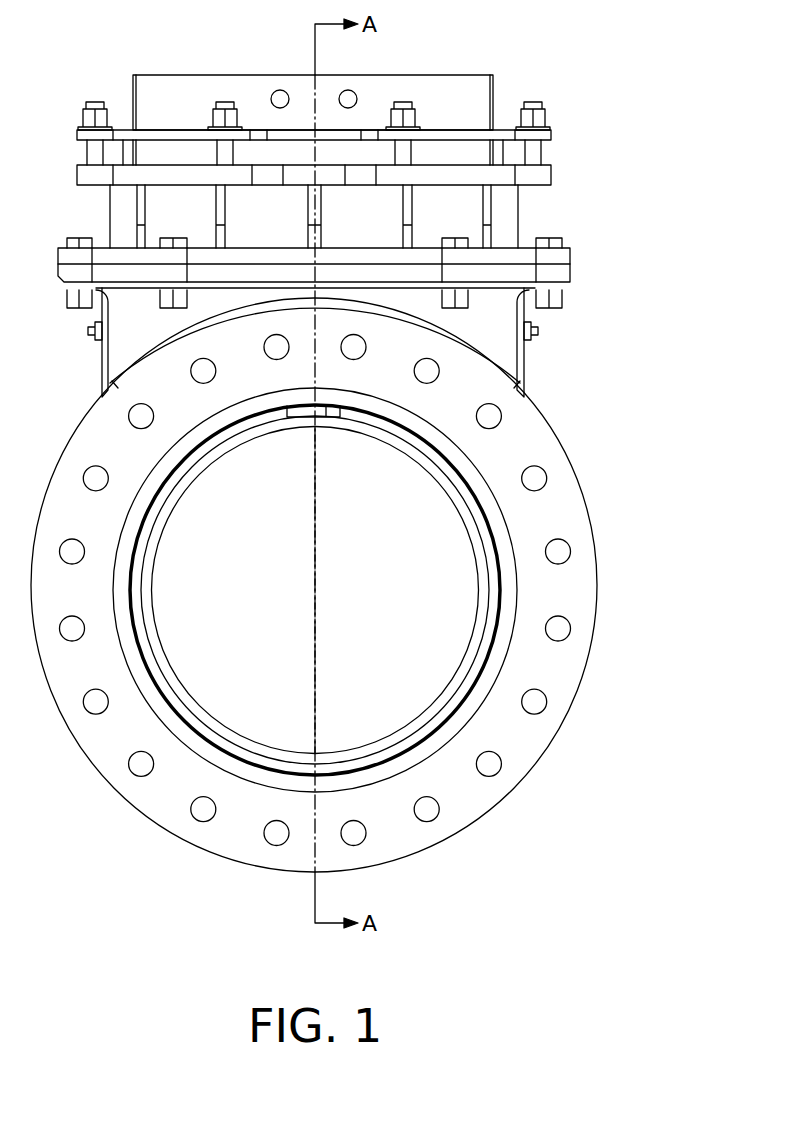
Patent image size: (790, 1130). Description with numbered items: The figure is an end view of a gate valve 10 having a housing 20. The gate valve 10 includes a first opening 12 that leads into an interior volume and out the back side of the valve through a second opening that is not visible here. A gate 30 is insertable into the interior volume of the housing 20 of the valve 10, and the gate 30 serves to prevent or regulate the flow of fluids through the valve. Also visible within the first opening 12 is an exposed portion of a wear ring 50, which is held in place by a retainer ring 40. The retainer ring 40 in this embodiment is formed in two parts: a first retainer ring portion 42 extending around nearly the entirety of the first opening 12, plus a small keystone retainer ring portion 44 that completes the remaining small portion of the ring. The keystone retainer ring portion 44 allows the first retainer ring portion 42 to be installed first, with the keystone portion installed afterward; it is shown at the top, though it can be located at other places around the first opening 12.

The gate valve 10 is at (636, 398).
The first opening 12 is at (385, 618).
The housing 20 is at (595, 618).
The gate 30 is at (432, 75).
The retainer ring 40 is at (140, 565).
The first retainer ring portion 42 is at (140, 648).
The keystone retainer ring portion 44 is at (325, 418).
The wear ring 50 is at (248, 740).